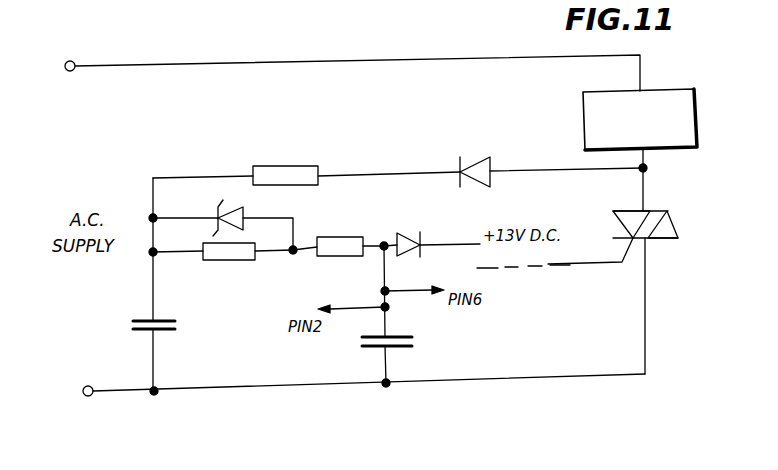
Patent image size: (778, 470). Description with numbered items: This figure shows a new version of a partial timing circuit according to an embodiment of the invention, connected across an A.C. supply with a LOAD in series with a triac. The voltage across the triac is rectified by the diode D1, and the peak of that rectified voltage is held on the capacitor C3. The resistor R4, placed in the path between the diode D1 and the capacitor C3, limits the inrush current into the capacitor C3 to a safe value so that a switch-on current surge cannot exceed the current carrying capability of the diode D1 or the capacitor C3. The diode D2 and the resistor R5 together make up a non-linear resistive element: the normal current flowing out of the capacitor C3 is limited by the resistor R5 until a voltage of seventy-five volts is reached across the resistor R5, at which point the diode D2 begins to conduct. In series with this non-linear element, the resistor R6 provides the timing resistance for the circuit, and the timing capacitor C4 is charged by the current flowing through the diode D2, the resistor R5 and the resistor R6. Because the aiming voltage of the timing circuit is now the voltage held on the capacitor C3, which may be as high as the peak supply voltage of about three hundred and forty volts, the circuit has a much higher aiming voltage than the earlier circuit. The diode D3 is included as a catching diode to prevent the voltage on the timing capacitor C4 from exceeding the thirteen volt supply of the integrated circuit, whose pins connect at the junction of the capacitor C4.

The load LOAD is at (640, 119).
The resistor R4 is at (235, 164).
The resistor R5 is at (223, 262).
The resistor R6 is at (338, 259).
The diode D1 is at (544, 152).
The diode D2 is at (267, 223).
The catching diode D3 is at (432, 243).
The capacitor C3 is at (143, 329).
The timing capacitor C4 is at (401, 343).